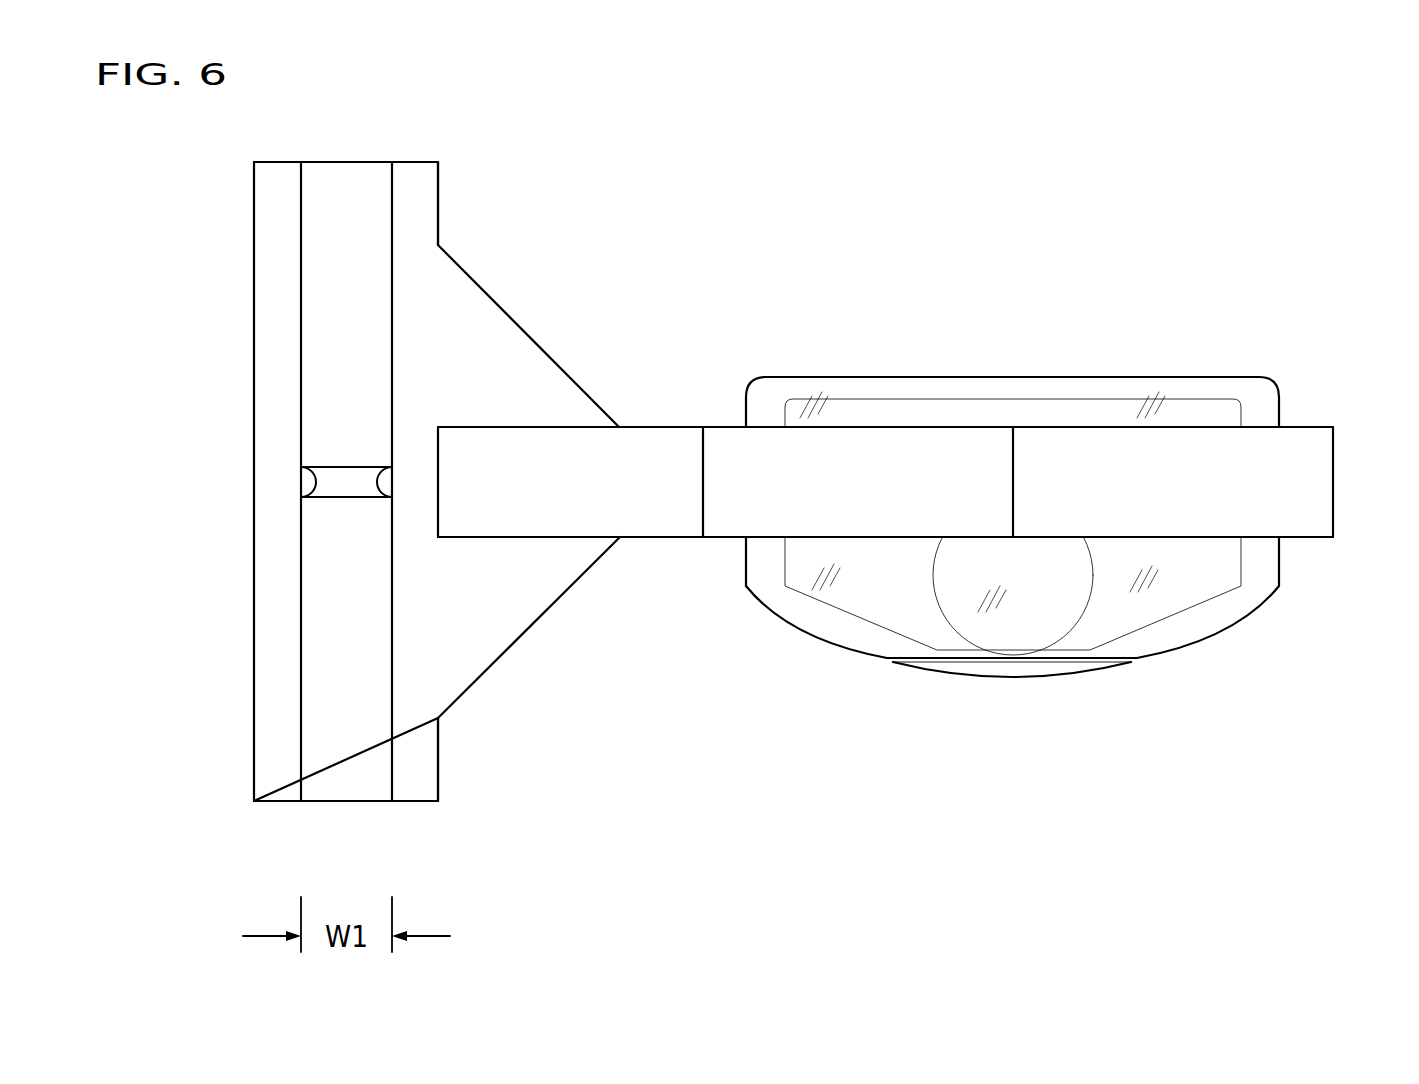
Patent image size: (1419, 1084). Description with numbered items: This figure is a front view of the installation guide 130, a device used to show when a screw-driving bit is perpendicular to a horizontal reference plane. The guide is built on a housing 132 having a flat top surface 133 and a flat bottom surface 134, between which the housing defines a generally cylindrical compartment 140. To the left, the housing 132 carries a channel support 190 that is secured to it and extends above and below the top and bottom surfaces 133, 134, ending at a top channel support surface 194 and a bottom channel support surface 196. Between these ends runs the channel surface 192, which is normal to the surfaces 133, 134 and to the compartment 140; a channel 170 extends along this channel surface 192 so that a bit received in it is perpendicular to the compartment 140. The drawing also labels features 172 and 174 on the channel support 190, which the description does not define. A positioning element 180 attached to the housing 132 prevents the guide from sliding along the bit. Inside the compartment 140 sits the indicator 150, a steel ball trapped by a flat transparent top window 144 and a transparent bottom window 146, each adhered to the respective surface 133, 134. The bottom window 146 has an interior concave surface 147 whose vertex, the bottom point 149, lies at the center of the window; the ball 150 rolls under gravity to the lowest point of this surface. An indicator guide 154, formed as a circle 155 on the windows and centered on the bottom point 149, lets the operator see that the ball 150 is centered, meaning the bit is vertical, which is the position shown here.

The installation guide 130 is at (1138, 178).
The housing 132 is at (547, 353).
The top surface 133 is at (1310, 427).
The bottom surface 134 is at (1307, 537).
The compartment 140 is at (1114, 609).
The top window 144 is at (1218, 378).
The bottom window 146 is at (746, 570).
The concave surface 147 is at (833, 612).
The bottom point 149 is at (1013, 655).
The indicator 150 is at (1182, 563).
The indicator guide 154 is at (883, 684).
The circle 155 is at (1122, 667).
The channel 170 is at (346, 226).
The channel 172 is at (337, 190).
The channel walls 174 is at (298, 185).
The positioning element 180 is at (303, 478).
The channel support 190 is at (502, 205).
The channel surface 192 is at (498, 375).
The top channel support surface 194 is at (423, 158).
The bottom channel support surface 196 is at (417, 803).